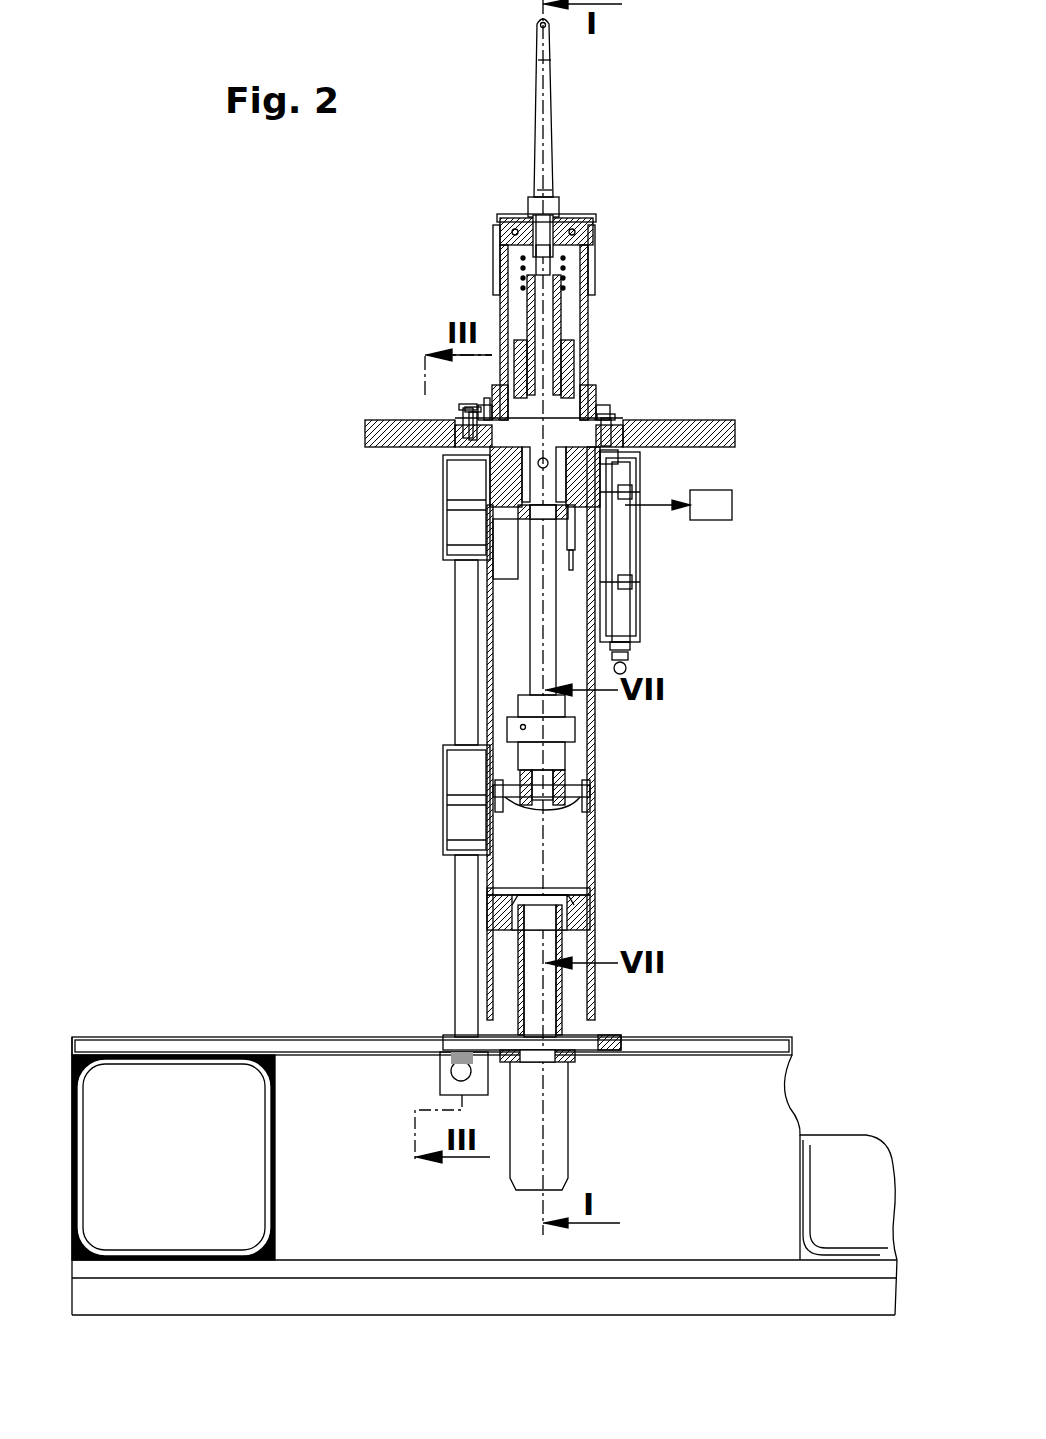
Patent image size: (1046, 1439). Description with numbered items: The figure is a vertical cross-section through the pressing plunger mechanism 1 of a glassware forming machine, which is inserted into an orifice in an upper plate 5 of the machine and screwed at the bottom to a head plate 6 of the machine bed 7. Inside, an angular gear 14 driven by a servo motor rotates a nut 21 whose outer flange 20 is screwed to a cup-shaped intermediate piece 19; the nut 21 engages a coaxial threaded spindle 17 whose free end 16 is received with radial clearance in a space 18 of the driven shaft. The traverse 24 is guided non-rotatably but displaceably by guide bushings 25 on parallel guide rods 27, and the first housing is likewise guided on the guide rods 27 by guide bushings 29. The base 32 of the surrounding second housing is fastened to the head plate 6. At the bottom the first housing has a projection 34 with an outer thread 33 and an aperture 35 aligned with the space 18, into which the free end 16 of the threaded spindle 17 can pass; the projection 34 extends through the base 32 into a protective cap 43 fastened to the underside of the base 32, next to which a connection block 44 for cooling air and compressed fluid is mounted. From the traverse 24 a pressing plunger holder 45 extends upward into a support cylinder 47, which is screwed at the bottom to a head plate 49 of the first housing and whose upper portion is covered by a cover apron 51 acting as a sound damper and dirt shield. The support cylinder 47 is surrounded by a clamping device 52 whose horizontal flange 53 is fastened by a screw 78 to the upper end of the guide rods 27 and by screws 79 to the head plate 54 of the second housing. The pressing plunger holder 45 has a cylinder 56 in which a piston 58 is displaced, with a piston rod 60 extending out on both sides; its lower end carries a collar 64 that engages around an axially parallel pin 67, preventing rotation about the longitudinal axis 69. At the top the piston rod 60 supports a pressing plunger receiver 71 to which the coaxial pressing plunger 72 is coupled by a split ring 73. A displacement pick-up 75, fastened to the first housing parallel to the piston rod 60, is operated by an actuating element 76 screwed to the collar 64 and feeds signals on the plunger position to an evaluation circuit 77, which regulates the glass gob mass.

The pressing plunger mechanism 1 is at (790, 260).
The upper plate 5 is at (735, 432).
The head plate 6 is at (755, 1040).
The machine bed 7 is at (180, 1035).
The angular gear 14 is at (505, 873).
The free end 16 is at (565, 780).
The threaded spindle 17 is at (533, 603).
The space 18 is at (542, 797).
The intermediate piece 19 is at (518, 748).
The outer flange 20 is at (576, 727).
The nut 21 is at (516, 703).
The traverse 24 is at (505, 482).
The guide bushing 25 is at (445, 532).
The guide rod 27 is at (466, 655).
The guide bushing 29 is at (445, 775).
The base 32 is at (612, 1032).
The outer thread 33 is at (520, 1017).
The projection 34 is at (518, 940).
The aperture 35 is at (545, 1012).
The protective cap 43 is at (553, 1125).
The connection block 44 is at (440, 1093).
The pressing plunger holder 45 is at (500, 440).
The support cylinder 47 is at (562, 300).
The head plate 49 is at (602, 456).
The cover apron 51 is at (590, 236).
The clamping device 52 is at (600, 385).
The horizontal flange 53 is at (463, 410).
The head plate 54 is at (625, 420).
The cylinder 56 is at (490, 400).
The piston 58 is at (550, 383).
The piston rod 60 is at (582, 320).
The collar 64 is at (517, 545).
The pin 67 is at (570, 565).
The longitudinal axis 69 is at (548, 95).
The pressing plunger receiver 71 is at (533, 252).
The pressing plunger 72 is at (537, 124).
The split ring 73 is at (512, 210).
The displacement pick-up 75 is at (605, 545).
The actuating element 76 is at (590, 515).
The evaluation circuit 77 is at (732, 503).
The screw 78 is at (468, 407).
The screws 79 is at (606, 415).